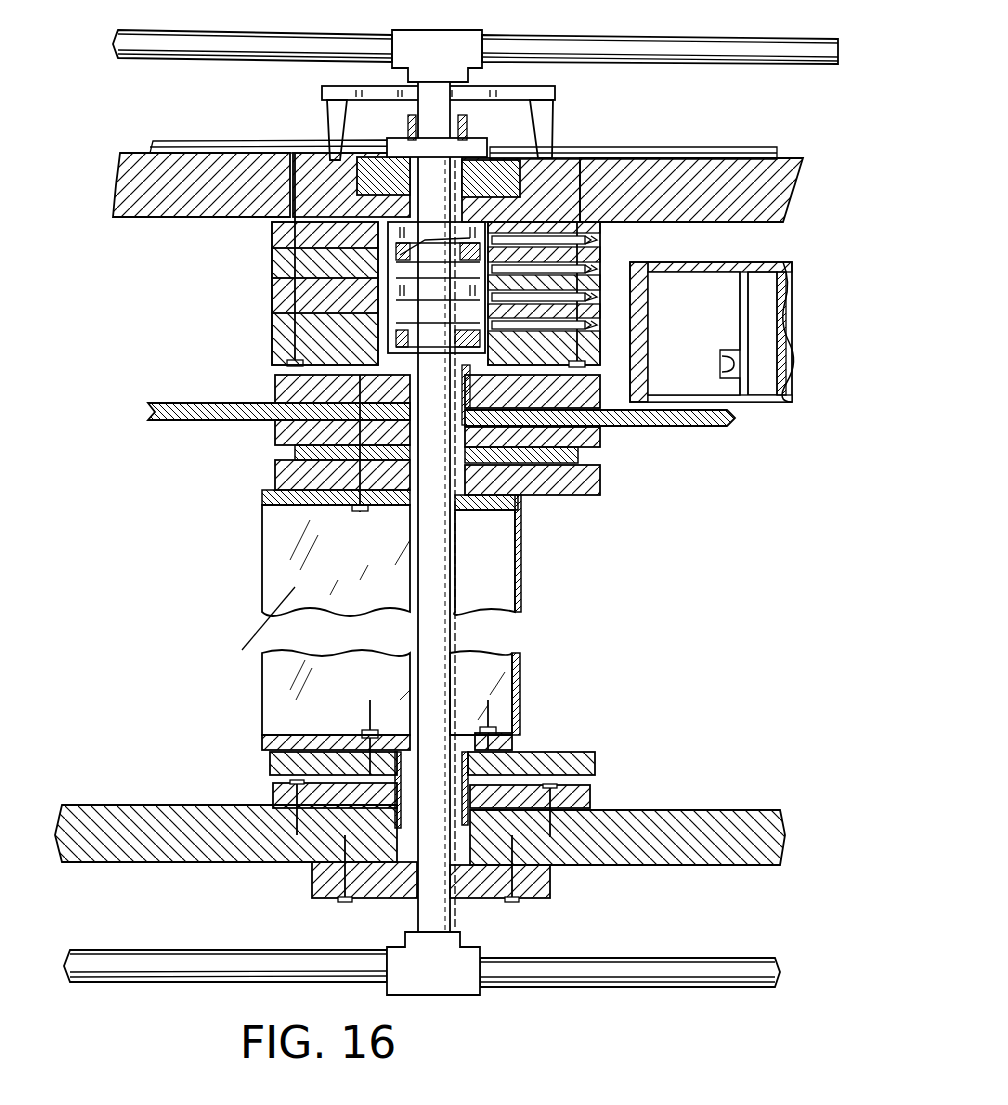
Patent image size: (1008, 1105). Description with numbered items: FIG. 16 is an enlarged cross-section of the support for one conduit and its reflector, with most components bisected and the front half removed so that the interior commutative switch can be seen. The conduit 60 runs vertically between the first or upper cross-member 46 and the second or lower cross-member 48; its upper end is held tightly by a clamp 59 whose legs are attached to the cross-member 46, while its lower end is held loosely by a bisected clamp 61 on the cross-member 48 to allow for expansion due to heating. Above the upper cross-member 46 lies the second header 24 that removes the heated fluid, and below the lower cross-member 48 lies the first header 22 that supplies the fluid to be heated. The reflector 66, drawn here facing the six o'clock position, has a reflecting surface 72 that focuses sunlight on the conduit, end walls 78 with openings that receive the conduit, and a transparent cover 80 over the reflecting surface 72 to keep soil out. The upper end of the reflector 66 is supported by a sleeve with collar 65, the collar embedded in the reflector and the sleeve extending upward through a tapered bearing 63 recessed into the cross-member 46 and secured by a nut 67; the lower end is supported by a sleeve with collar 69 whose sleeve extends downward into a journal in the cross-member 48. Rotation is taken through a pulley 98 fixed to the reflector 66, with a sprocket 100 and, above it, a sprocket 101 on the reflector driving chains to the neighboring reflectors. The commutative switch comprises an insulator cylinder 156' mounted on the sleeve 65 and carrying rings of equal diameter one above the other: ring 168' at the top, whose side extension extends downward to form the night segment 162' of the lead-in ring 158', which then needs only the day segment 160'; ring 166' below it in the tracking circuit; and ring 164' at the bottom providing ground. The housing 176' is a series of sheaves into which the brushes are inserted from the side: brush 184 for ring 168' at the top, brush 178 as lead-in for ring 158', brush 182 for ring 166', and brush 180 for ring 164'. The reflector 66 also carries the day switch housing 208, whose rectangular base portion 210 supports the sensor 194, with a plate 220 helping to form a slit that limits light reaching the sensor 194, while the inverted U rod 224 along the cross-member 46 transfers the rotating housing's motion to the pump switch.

The second header 24 is at (750, 37).
The clamp 59 is at (545, 100).
The elongated inverted U rod 224 is at (207, 149).
The first or upper cross-member 46 is at (226, 194).
The tapered bearing 63 is at (357, 180).
The conduit 60 is at (424, 196).
The sleeve with collar 65 is at (408, 127).
The nut 67 is at (445, 141).
The housing 176' is at (494, 274).
The insulator cylinder 156' is at (296, 293).
The ring 168' is at (325, 235).
The day segment 160' is at (325, 263).
The ring 166' is at (325, 295).
The ring 164' is at (325, 339).
The night segment 162' is at (345, 272).
The ring 158' is at (443, 275).
The fourth brush 184 is at (575, 237).
The second brush 180 is at (544, 294).
The first brush 178 is at (543, 263).
The third brush 182 is at (547, 290).
The day switch housing 208 is at (758, 262).
The rectangular base portion 210 is at (668, 296).
The plate 220 is at (790, 290).
The sensor 194 is at (724, 358).
The pulley 98 is at (246, 427).
The sprocket 101 is at (578, 440).
The sprocket 100 is at (580, 475).
The end walls 78 is at (305, 488).
The reflector 66 is at (331, 569).
The solar energy transparent cover 80 is at (522, 550).
The reflecting surface 72 is at (262, 697).
The sleeve with collar 69 is at (496, 684).
The second or lower cross-member 48 is at (196, 844).
The clamp 61 is at (552, 886).
The first header 22 is at (251, 950).